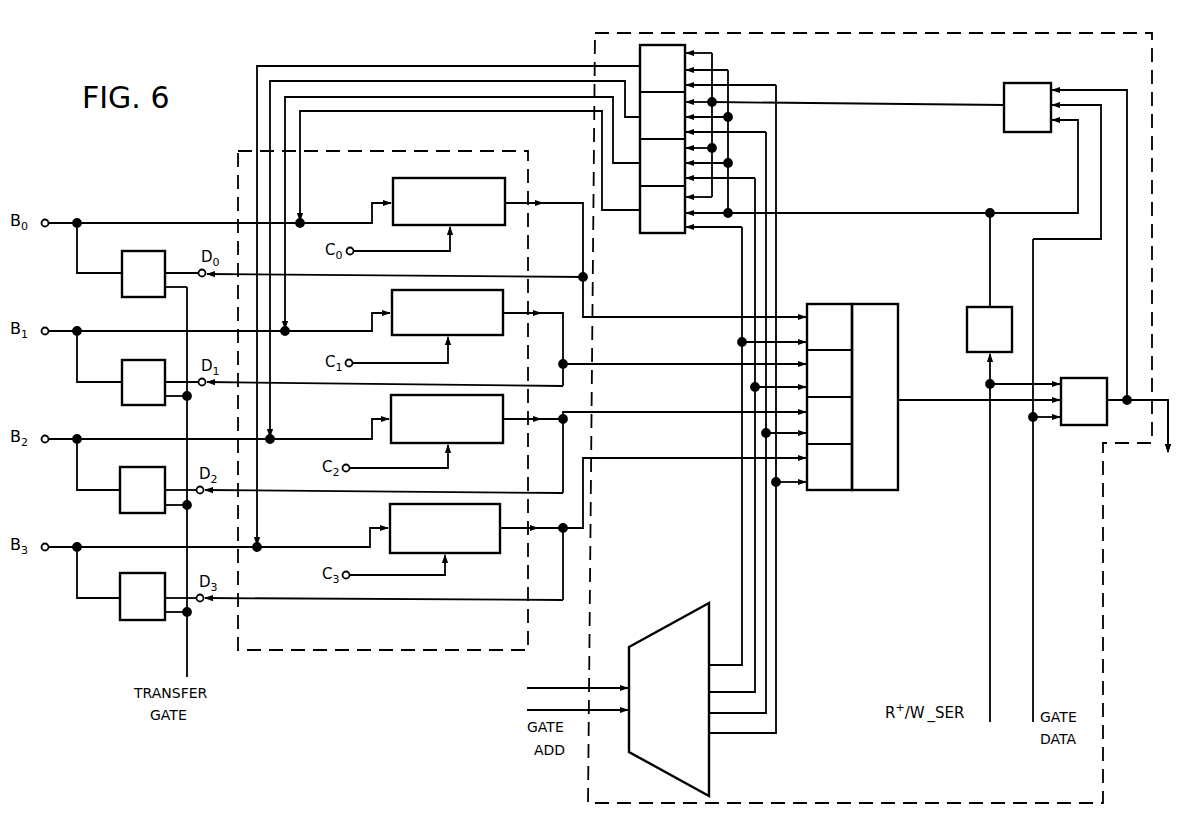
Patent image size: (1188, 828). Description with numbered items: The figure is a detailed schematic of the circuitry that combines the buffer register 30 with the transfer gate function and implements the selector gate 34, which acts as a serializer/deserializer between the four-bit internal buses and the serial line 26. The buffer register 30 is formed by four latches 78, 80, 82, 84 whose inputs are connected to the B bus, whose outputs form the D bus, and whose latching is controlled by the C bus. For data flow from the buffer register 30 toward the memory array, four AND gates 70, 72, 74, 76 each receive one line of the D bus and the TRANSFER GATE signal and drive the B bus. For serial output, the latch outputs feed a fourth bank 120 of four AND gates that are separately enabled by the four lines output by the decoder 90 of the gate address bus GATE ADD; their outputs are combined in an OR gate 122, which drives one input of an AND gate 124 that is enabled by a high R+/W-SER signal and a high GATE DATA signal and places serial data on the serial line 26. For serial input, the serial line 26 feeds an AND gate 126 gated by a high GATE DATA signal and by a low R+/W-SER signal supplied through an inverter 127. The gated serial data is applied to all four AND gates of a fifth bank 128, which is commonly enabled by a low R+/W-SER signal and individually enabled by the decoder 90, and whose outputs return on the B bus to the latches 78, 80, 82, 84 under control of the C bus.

The serial line 26 is at (1169, 413).
The buffer register 30 is at (529, 611).
The selector gate 34 is at (1153, 92).
The AND gate 70 is at (154, 249).
The AND gate 72 is at (154, 358).
The AND gate 74 is at (150, 466).
The AND gate 76 is at (153, 573).
The latch 78 is at (475, 228).
The latch 80 is at (470, 336).
The latch 82 is at (468, 444).
The latch 84 is at (467, 554).
The decoder 90 is at (681, 614).
The fourth bank 120 is at (846, 492).
The OR gate 122 is at (884, 492).
The AND gate 124 is at (1097, 377).
The AND gate 126 is at (1045, 82).
The inverter 127 is at (976, 305).
The fifth bank 128 is at (645, 234).